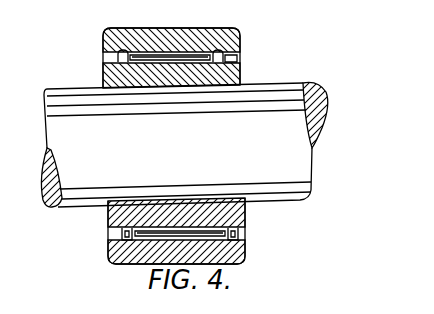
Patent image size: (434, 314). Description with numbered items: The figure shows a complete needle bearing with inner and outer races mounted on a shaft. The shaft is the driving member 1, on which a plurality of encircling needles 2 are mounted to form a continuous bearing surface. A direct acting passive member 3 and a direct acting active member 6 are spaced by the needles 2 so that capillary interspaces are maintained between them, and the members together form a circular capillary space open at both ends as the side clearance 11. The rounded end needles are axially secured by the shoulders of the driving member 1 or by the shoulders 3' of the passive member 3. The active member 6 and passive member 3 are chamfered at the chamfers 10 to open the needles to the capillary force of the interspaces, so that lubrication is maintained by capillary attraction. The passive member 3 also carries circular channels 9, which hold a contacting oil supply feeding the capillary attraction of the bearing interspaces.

The driving member 1 is at (318, 112).
The needles 2 is at (165, 48).
The passive member 3 is at (171, 30).
The shoulders of passive member 3' is at (172, 232).
The active member 6 is at (240, 78).
The circular channels 9 is at (128, 238).
The chamfers 10 is at (103, 64).
The side clearance 11 is at (110, 228).